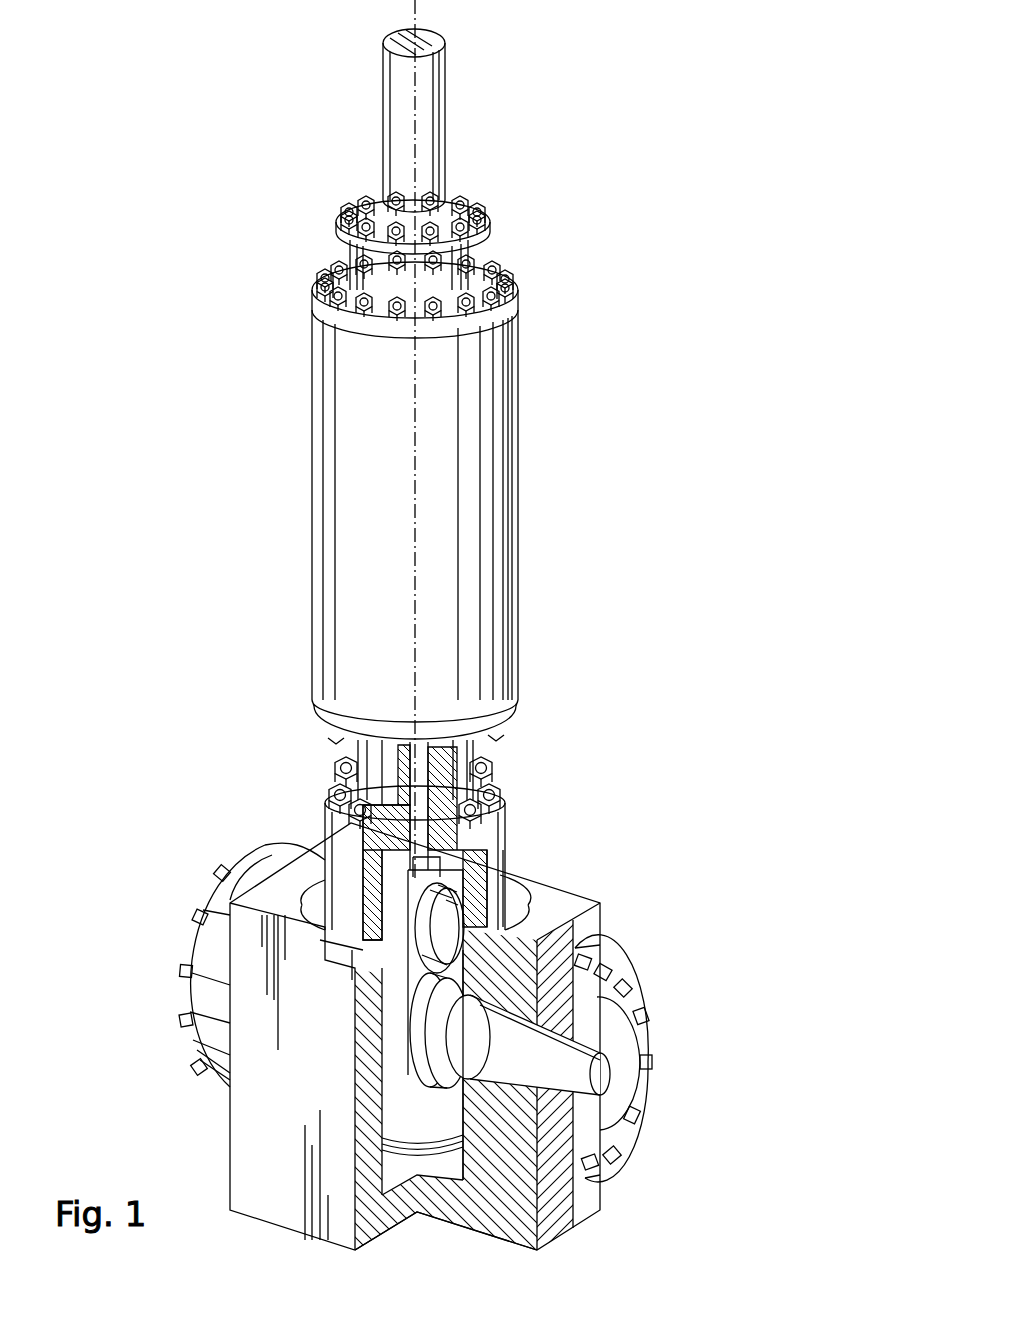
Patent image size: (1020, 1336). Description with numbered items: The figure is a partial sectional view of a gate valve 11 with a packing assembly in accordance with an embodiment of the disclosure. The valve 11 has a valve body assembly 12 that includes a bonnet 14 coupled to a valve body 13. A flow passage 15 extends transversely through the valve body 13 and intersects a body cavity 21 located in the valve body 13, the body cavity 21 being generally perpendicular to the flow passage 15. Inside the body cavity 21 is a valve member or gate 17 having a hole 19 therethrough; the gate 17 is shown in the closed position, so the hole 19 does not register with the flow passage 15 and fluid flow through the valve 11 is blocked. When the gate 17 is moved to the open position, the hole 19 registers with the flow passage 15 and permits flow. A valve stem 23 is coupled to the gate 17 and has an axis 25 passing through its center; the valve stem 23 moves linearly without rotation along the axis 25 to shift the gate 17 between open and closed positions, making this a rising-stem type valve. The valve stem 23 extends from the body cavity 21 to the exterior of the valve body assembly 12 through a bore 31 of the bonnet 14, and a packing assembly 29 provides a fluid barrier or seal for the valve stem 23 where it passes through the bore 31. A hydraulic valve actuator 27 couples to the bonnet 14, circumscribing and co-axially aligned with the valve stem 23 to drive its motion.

The valve 11 is at (507, 373).
The valve body assembly 12 is at (481, 995).
The valve body 13 is at (583, 900).
The bonnet 14 is at (340, 837).
The flow passage 15 is at (630, 1105).
The gate 17 is at (455, 870).
The hole 19 is at (440, 925).
The body cavity 21 is at (470, 1205).
The valve stem 23 is at (340, 766).
The axis 25 is at (413, 3).
The valve actuator 27 is at (512, 352).
The packing assembly 29 is at (497, 781).
The bore 31 is at (435, 835).